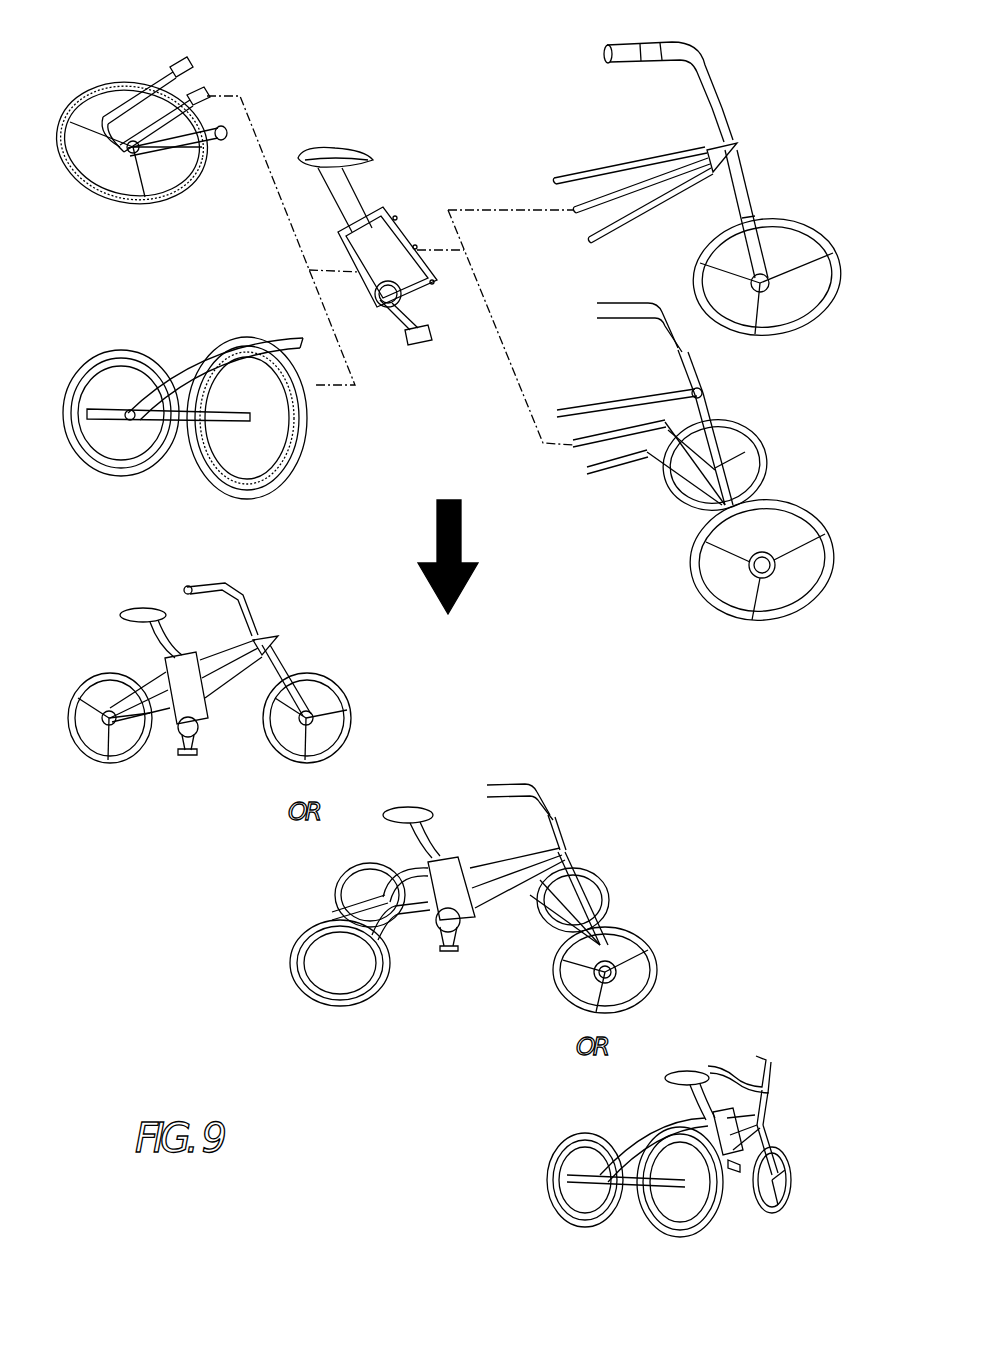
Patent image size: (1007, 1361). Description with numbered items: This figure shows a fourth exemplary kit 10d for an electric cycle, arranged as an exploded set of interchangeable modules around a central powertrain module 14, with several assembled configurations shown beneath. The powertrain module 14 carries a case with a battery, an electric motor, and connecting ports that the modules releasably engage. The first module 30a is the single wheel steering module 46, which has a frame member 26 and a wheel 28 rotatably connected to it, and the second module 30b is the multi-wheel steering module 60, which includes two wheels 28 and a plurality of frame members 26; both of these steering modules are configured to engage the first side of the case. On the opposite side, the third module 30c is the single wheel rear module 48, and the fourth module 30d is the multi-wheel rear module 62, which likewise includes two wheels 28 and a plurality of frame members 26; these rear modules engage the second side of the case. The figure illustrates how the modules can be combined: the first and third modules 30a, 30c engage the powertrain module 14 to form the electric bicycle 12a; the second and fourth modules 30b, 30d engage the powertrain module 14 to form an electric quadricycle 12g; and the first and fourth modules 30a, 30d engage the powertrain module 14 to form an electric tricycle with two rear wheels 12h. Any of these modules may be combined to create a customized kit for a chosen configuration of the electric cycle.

The kit 10d is at (816, 56).
The electric bicycle 12a is at (274, 590).
The electric quadricycle 12g is at (598, 775).
The electric tricycle with two rear wheels 12h is at (790, 1025).
The powertrain module 14 is at (330, 150).
The frame member 26 is at (160, 65).
The wheel 28 is at (800, 320).
The first module 30a is at (695, 31).
The second module 30b is at (571, 299).
The third module 30c is at (192, 22).
The fourth module 30d is at (138, 300).
The single wheel steering module 46 is at (735, 145).
The single wheel rear module 48 is at (97, 186).
The multi-wheel steering module 60 is at (702, 391).
The multi-wheel rear module 62 is at (275, 480).